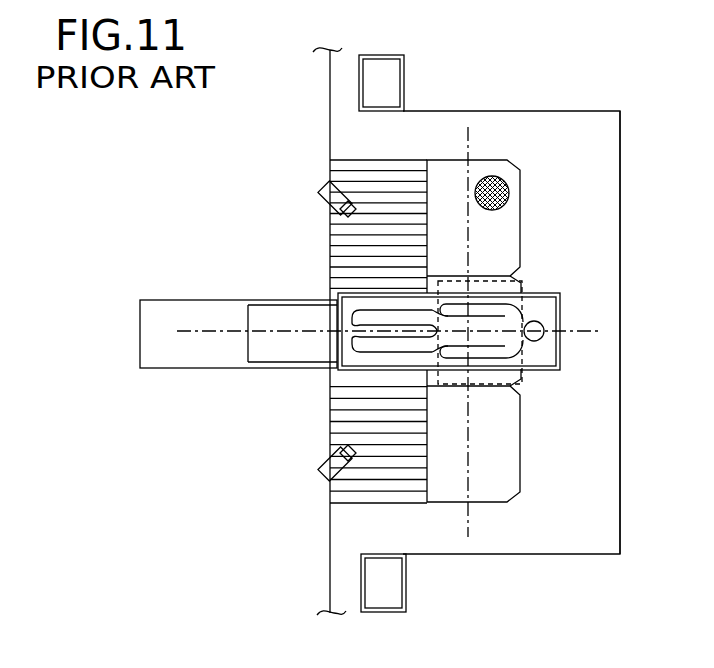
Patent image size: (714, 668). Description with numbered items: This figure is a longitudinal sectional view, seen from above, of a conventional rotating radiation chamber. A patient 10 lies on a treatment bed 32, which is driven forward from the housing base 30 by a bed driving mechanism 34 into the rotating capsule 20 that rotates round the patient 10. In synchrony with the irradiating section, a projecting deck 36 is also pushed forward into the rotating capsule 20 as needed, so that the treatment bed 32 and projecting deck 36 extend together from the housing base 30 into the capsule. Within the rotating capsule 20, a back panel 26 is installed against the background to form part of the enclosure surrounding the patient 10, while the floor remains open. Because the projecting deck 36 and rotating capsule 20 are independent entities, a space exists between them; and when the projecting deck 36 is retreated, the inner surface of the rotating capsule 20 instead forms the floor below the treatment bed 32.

The patient 10 is at (514, 345).
The rotating capsule 20 is at (542, 110).
The back panel 26 is at (620, 178).
The housing base 30 is at (336, 524).
The treatment bed 32 is at (548, 292).
The bed driving mechanism 34 is at (230, 369).
The projecting deck 36 is at (520, 180).